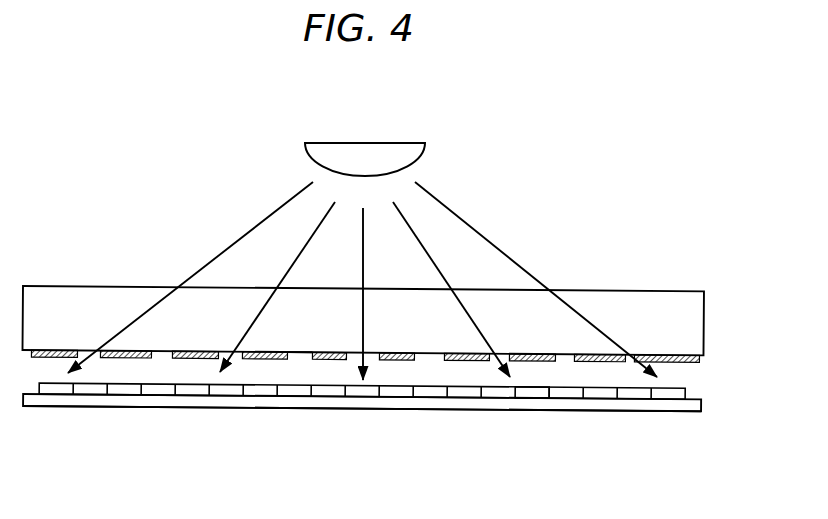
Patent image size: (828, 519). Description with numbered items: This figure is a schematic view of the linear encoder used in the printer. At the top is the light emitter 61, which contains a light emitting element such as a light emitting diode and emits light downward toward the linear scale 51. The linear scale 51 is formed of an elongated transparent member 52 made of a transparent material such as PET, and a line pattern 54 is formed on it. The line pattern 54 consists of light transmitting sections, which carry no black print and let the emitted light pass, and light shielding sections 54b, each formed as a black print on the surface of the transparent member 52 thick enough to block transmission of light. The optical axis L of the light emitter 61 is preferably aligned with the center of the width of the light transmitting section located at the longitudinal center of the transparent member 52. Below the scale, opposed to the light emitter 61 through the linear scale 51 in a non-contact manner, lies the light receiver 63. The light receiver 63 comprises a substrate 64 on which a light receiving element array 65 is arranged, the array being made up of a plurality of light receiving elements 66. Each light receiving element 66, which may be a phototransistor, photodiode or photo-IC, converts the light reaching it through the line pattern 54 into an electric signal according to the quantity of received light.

The linear scale 51 is at (363, 283).
The transparent member 52 is at (362, 320).
The line pattern 54 is at (365, 356).
The light shielding section 54b is at (329, 355).
The light emitter 61 is at (379, 159).
The light receiver 63 is at (362, 402).
The substrate 64 is at (362, 408).
The light receiving element array 65 is at (532, 392).
The light receiving element 66 is at (362, 391).
The optical axis L is at (365, 302).